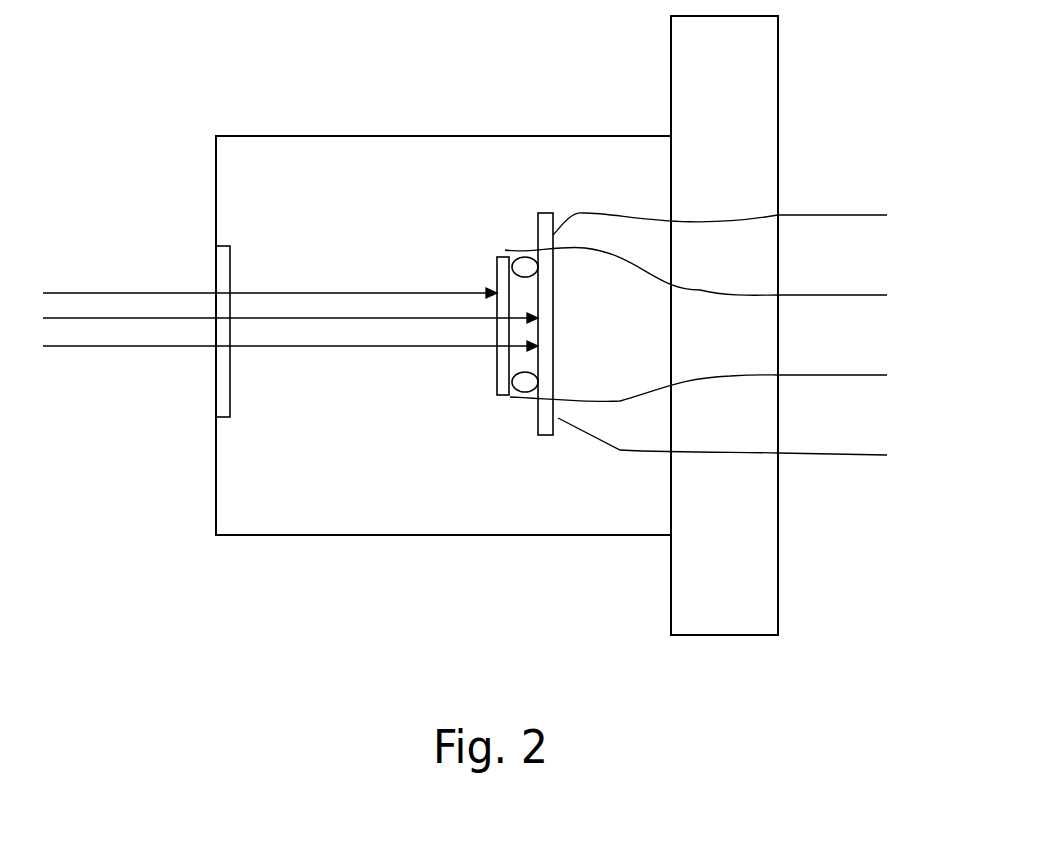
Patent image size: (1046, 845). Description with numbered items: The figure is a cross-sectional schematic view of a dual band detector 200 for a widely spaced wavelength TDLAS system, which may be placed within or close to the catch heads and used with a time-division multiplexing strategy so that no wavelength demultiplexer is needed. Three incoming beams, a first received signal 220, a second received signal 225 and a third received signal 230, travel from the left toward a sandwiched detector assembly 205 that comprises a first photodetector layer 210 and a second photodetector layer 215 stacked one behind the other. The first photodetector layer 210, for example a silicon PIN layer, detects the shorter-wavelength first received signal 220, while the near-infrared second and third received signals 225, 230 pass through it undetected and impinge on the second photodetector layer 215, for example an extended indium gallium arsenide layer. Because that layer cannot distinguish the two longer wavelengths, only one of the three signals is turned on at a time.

The dual band detector 200 is at (604, 649).
The optical assembly 205 is at (648, 370).
The first photodetector layer 210 is at (498, 256).
The second photodetector layer 215 is at (539, 213).
The first received signal 220 is at (137, 292).
The second received signal 225 is at (95, 320).
The third received signal 230 is at (178, 348).